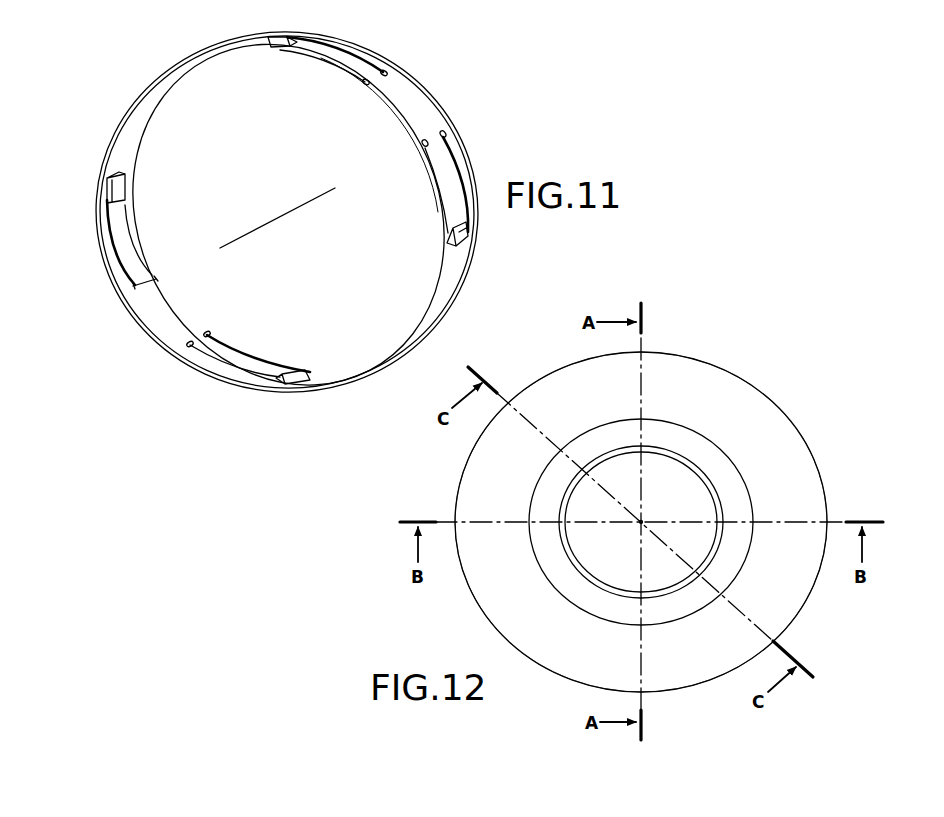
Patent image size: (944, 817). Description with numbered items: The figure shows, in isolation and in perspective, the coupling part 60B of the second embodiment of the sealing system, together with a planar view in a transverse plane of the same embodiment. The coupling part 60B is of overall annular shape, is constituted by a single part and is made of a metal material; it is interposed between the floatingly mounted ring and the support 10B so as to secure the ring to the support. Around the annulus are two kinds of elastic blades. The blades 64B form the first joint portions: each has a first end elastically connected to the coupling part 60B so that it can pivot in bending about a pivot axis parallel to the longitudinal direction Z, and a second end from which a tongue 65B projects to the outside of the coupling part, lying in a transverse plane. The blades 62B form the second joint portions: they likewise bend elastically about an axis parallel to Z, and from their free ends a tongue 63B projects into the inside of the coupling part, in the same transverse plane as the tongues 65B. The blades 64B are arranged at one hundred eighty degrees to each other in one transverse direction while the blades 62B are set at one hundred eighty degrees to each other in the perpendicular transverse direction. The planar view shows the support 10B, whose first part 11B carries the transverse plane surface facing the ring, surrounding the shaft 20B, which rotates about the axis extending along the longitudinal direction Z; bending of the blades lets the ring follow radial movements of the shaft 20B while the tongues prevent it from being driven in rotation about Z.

In FIG. 11, the coupling part 60B is at (456, 105).
In FIG. 11, the second joint portion blade 62B is at (132, 248).
In FIG. 11, the tongue 63B is at (121, 186).
In FIG. 11, the first joint portion blade 64B is at (334, 55).
In FIG. 11, the tongue 65B is at (286, 37).
In FIG. 12, the first part of the support 11B is at (783, 357).
In FIG. 12, the support 10B is at (641, 522).
In FIG. 12, the shaft 20B is at (691, 502).
In FIG. 11, the longitudinal direction Z is at (280, 222).
In FIG. 12, the longitudinal direction Z is at (641, 522).